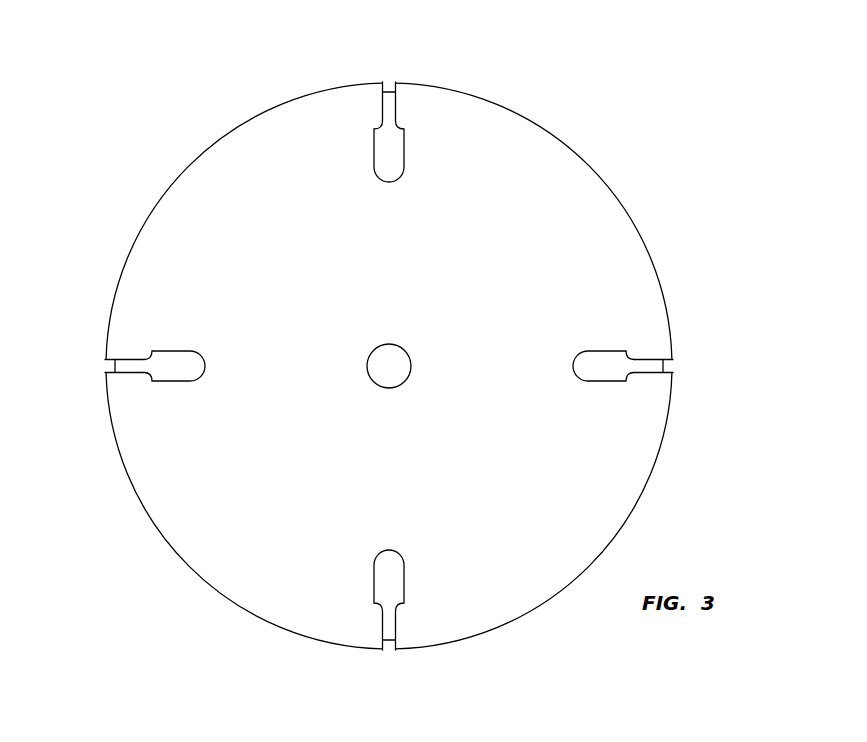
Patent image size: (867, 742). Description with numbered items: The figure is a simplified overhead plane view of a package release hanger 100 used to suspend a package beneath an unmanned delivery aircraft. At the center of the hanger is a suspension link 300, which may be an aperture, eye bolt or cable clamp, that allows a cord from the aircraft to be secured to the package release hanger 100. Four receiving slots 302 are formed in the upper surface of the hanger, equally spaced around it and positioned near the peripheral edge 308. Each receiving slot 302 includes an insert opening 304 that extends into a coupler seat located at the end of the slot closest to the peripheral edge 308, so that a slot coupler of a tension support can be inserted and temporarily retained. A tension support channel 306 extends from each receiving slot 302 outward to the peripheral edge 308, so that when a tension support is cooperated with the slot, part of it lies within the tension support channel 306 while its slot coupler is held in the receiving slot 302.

The package release hanger 100 is at (389, 366).
The suspension link 300 is at (380, 377).
The receiving slot 302 is at (386, 369).
The insert opening 304 is at (380, 165).
The tension support channel 306 is at (389, 78).
The peripheral edge 308 is at (223, 135).